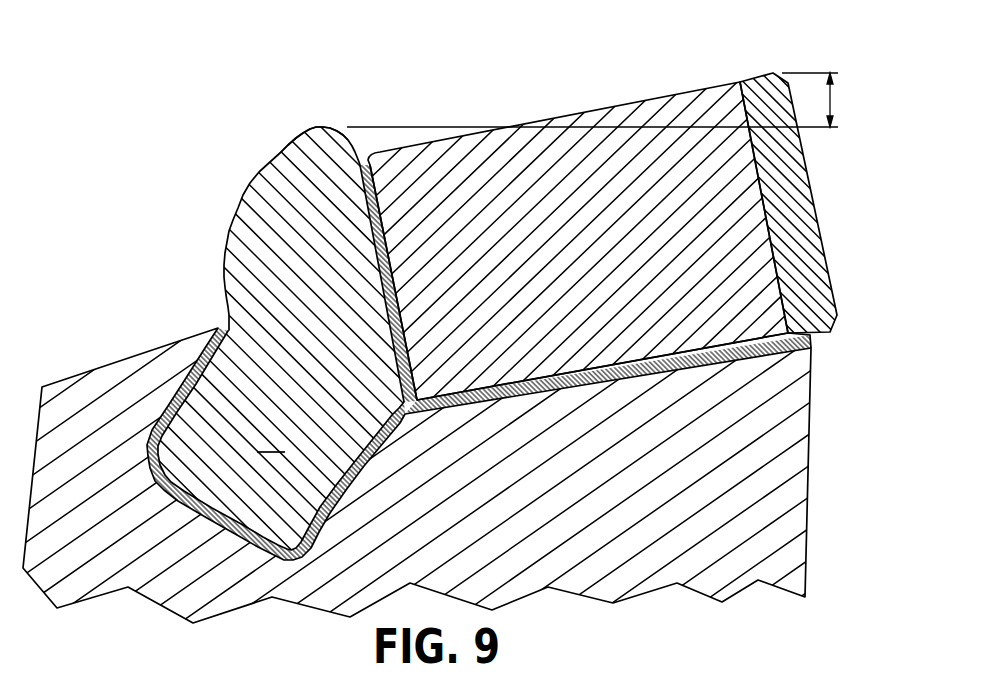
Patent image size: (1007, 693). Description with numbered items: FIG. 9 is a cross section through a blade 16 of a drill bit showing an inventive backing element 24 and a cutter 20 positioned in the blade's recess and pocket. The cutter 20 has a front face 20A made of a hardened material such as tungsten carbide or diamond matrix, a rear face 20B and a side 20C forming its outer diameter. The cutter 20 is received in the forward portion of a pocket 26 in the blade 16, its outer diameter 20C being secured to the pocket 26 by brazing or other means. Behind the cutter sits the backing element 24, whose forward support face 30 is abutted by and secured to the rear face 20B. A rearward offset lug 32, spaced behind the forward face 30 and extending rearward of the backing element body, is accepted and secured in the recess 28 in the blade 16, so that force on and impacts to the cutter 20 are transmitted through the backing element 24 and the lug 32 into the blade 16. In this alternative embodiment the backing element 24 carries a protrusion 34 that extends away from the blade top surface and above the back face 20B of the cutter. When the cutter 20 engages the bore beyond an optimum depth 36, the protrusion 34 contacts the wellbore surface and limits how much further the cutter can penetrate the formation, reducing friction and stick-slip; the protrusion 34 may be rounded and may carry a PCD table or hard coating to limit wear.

The blade 16 is at (808, 470).
The cutter 20 is at (684, 92).
The front face 20A is at (823, 189).
The rear face 20B is at (397, 287).
The side 20C is at (577, 373).
The backing element 24 is at (250, 185).
The pocket 26 is at (540, 394).
The recess 28 is at (352, 485).
The forward support face 30 is at (377, 262).
The rearward offset lug 32 is at (271, 438).
The protrusion 34 is at (306, 130).
The optimum depth 36 is at (836, 100).